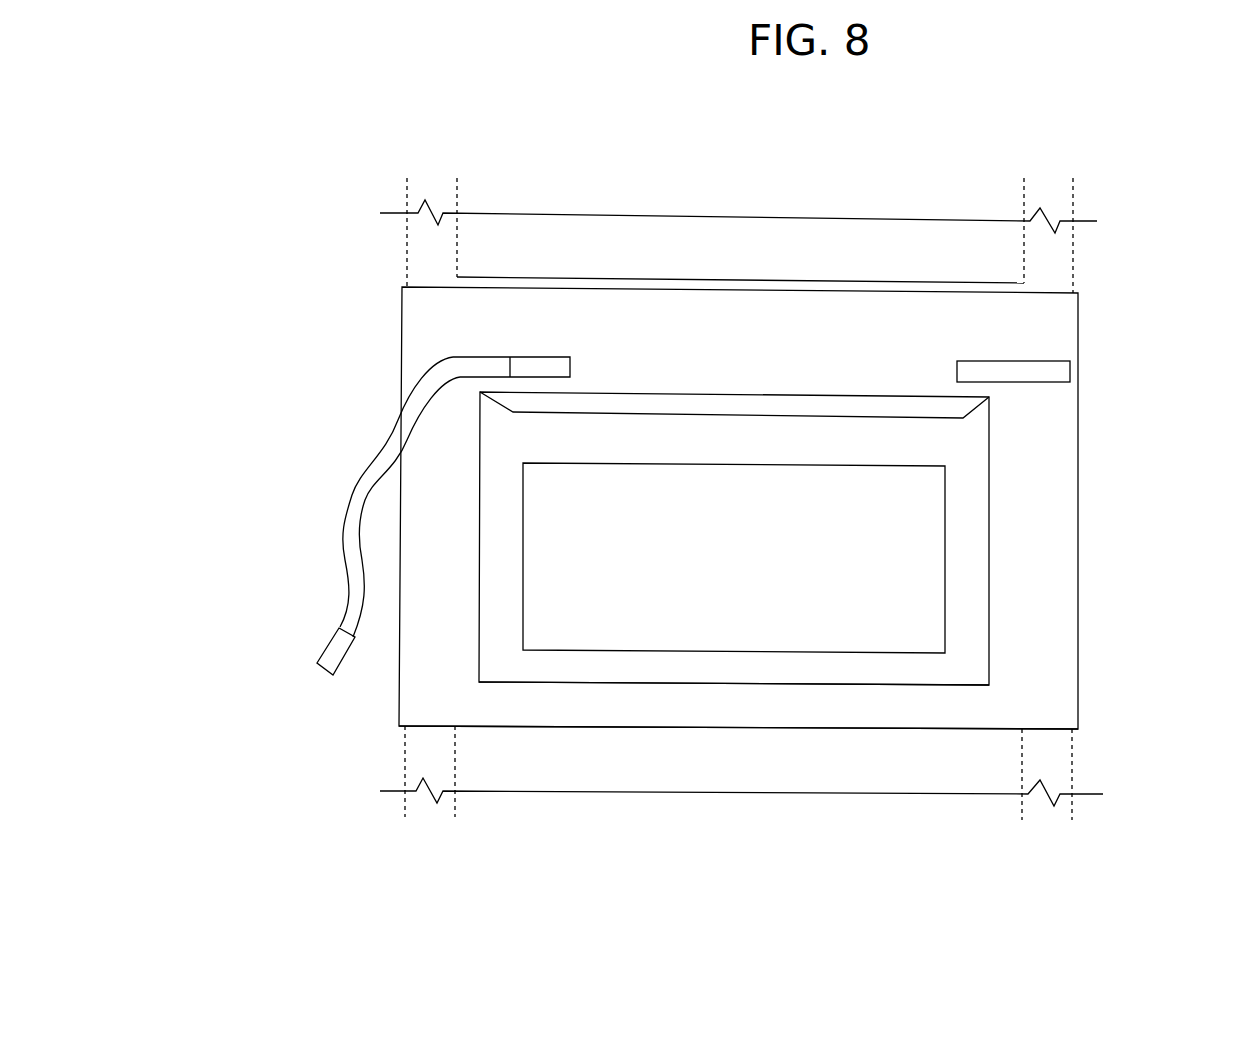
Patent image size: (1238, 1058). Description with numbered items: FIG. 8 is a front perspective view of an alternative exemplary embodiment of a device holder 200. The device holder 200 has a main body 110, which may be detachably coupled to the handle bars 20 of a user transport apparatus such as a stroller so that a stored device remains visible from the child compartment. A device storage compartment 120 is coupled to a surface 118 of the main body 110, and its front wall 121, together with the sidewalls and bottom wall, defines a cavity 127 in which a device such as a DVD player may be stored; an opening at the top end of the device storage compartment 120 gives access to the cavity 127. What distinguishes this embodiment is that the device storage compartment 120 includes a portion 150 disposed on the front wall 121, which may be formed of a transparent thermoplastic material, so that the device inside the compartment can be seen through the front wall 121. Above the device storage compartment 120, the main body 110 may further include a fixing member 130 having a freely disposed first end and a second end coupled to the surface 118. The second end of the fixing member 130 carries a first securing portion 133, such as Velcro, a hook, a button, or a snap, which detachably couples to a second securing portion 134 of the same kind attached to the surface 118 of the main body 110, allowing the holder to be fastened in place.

The device holder 200 is at (314, 208).
The handle bars 20 is at (1073, 253).
The main body 110 is at (1055, 482).
The surface 118 is at (1055, 640).
The device storage compartment 120 is at (1005, 547).
The front wall 121 is at (744, 669).
The cavity 127 is at (701, 400).
The fixing member 130 is at (352, 495).
The first securing portion 133 is at (318, 660).
The second securing portion 134 is at (1057, 371).
The transparent portion 150 is at (945, 585).